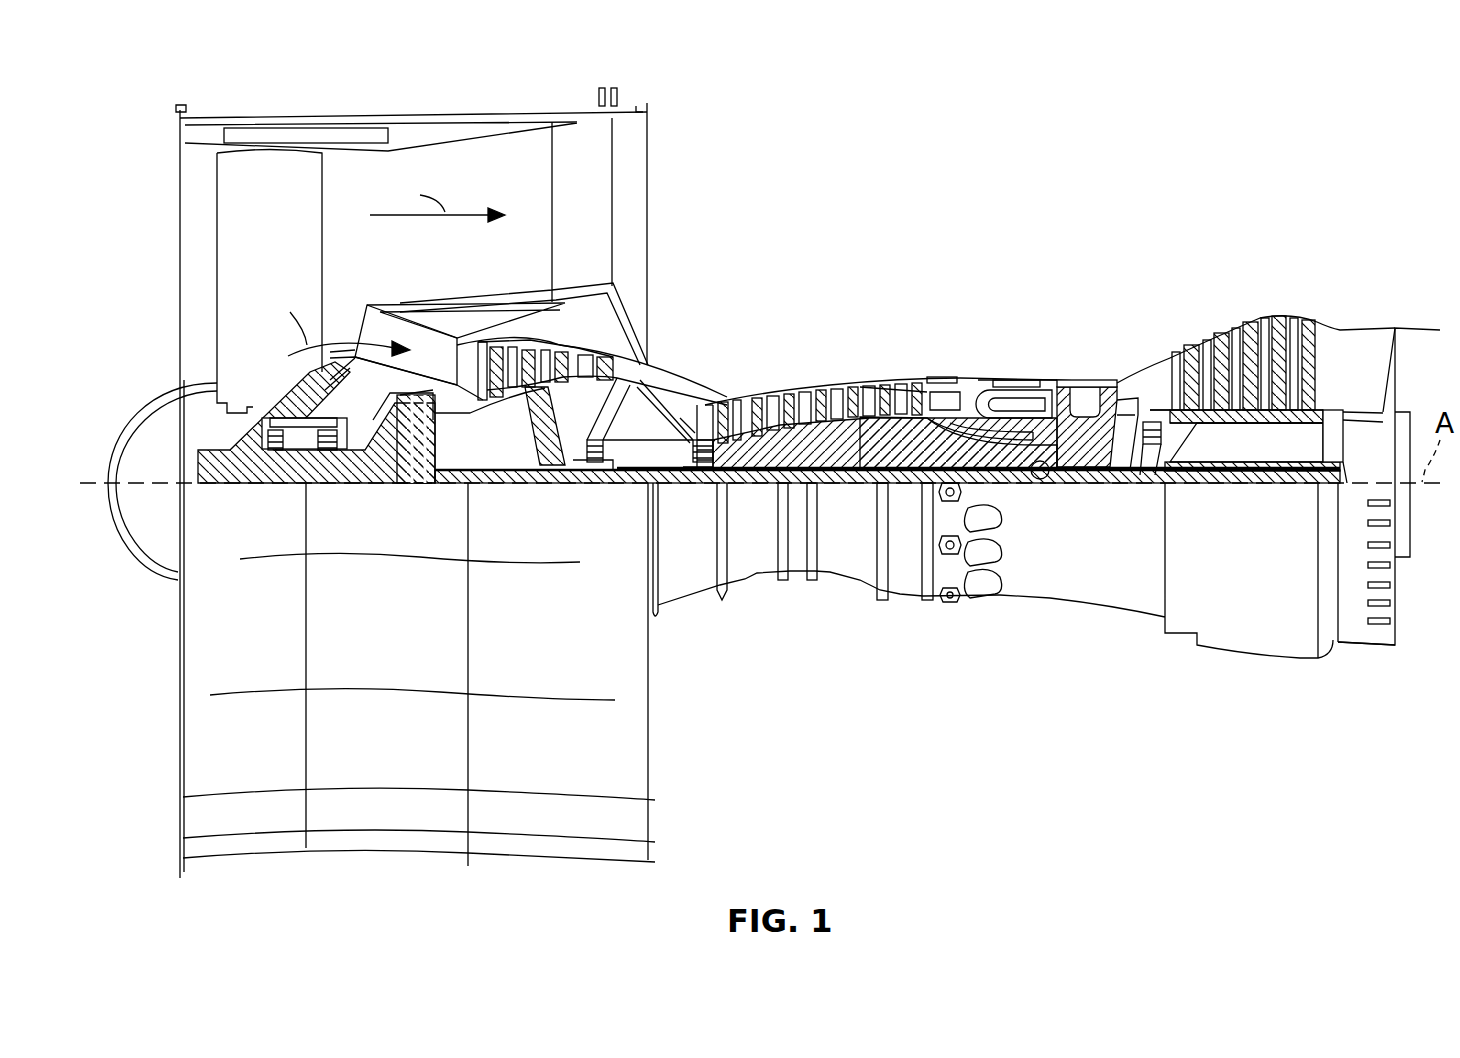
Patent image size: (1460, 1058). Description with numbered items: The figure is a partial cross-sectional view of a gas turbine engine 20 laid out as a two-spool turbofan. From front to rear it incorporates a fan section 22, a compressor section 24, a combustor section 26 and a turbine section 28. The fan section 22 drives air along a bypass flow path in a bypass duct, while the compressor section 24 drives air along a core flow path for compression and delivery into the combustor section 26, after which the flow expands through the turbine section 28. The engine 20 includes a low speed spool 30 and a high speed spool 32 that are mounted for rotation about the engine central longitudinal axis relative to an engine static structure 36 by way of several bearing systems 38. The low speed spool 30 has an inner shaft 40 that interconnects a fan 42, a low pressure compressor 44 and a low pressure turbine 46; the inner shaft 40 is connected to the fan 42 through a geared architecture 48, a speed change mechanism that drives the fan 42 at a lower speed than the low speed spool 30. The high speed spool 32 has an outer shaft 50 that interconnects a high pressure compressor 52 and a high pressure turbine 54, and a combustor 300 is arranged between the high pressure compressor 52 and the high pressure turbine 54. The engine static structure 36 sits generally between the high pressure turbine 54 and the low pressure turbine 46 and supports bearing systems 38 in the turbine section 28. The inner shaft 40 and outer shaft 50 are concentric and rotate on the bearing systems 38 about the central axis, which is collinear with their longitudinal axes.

The gas turbine engine 20 is at (1308, 92).
The fan section 22 is at (288, 106).
The compressor section 24 is at (820, 280).
The combustor section 26 is at (1020, 280).
The turbine section 28 is at (1167, 280).
The low speed spool 30 is at (864, 494).
The high speed spool 32 is at (922, 436).
The engine static structure 36 is at (905, 604).
The bearing systems 38 is at (280, 450).
The inner shaft 40 is at (667, 488).
The fan 42 is at (285, 247).
The low pressure compressor 44 is at (560, 360).
The low pressure turbine 46 is at (1252, 335).
The geared architecture 48 is at (410, 468).
The outer shaft 50 is at (1043, 484).
The high pressure compressor 52 is at (826, 450).
The high pressure turbine 54 is at (1085, 378).
The combustor 300 is at (1005, 404).